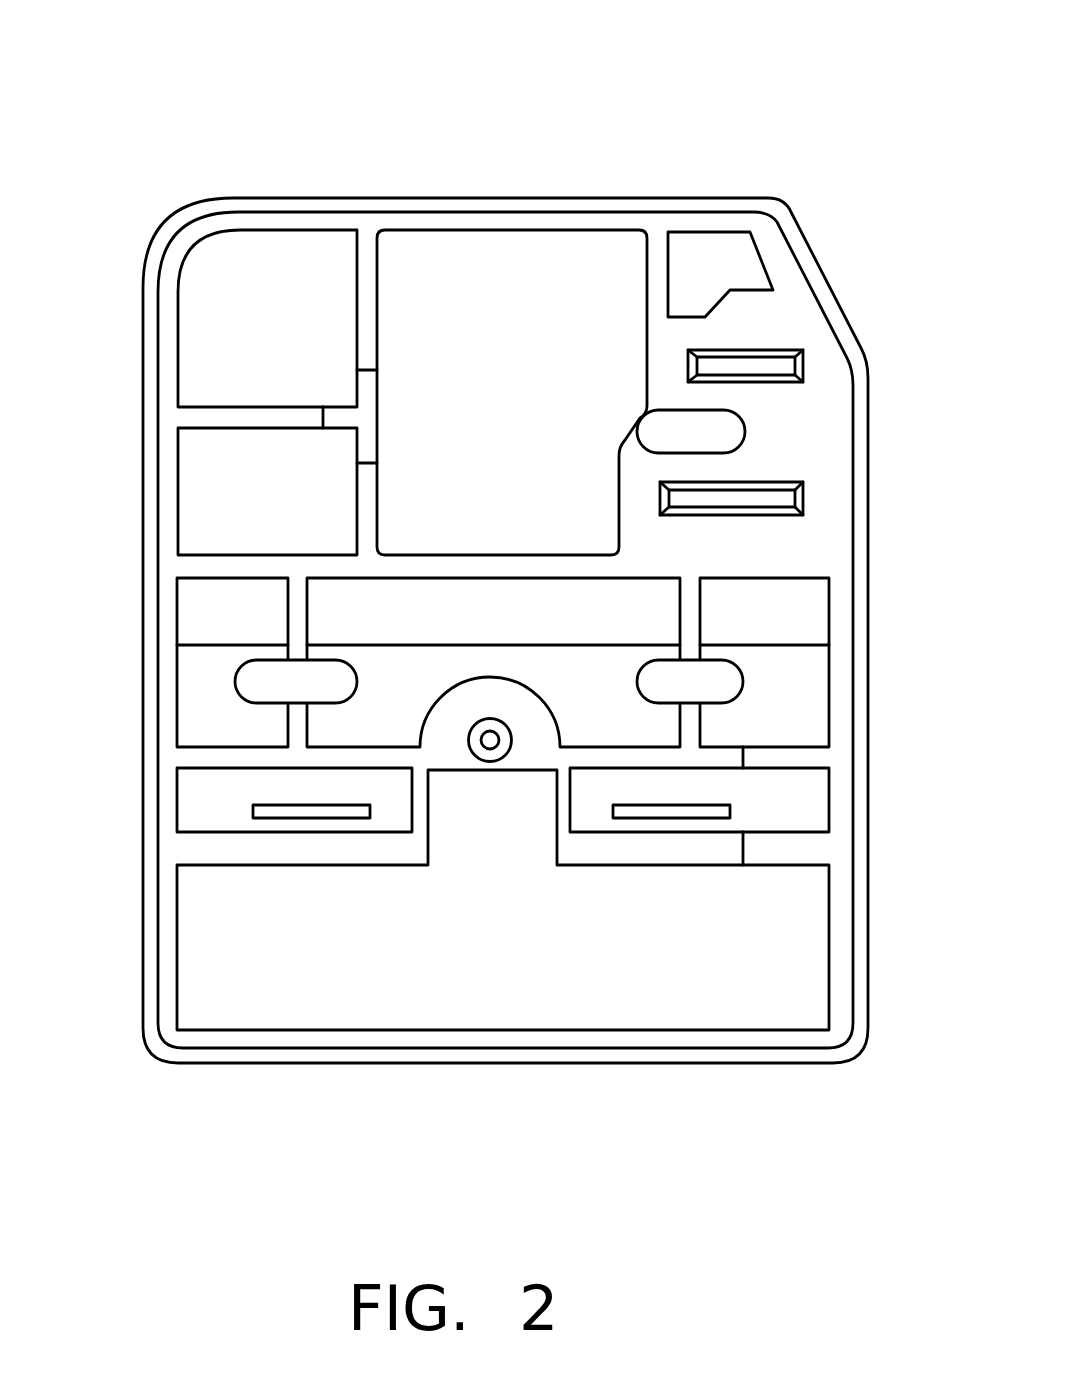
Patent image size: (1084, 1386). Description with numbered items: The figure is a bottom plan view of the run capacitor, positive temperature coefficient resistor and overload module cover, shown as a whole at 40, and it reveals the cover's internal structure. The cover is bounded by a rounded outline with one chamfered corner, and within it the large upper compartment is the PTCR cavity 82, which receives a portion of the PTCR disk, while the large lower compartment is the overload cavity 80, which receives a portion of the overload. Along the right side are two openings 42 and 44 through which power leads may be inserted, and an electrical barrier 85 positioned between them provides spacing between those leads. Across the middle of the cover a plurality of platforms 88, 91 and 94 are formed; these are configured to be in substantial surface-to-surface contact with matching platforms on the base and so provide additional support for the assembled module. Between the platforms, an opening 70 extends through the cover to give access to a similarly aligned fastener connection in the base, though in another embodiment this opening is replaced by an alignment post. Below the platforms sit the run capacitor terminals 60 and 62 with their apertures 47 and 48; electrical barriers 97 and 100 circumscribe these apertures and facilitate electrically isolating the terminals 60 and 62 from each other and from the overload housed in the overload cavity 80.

The card 40 is at (274, 53).
The PTCR cavity 82 is at (522, 265).
The opening 44 is at (713, 362).
The electrical barrier 85 is at (710, 427).
The opening 42 is at (735, 492).
The platform 88 is at (267, 670).
The platform 91 is at (712, 670).
The platform 94 is at (527, 708).
The opening 70 is at (488, 738).
The run capacitor terminal 60 is at (325, 808).
The run capacitor terminal 62 is at (700, 813).
The aperture 47 is at (345, 820).
The aperture 48 is at (713, 820).
The electrical barrier 97 is at (237, 815).
The electrical barrier 100 is at (668, 855).
The overload cavity 80 is at (565, 1015).